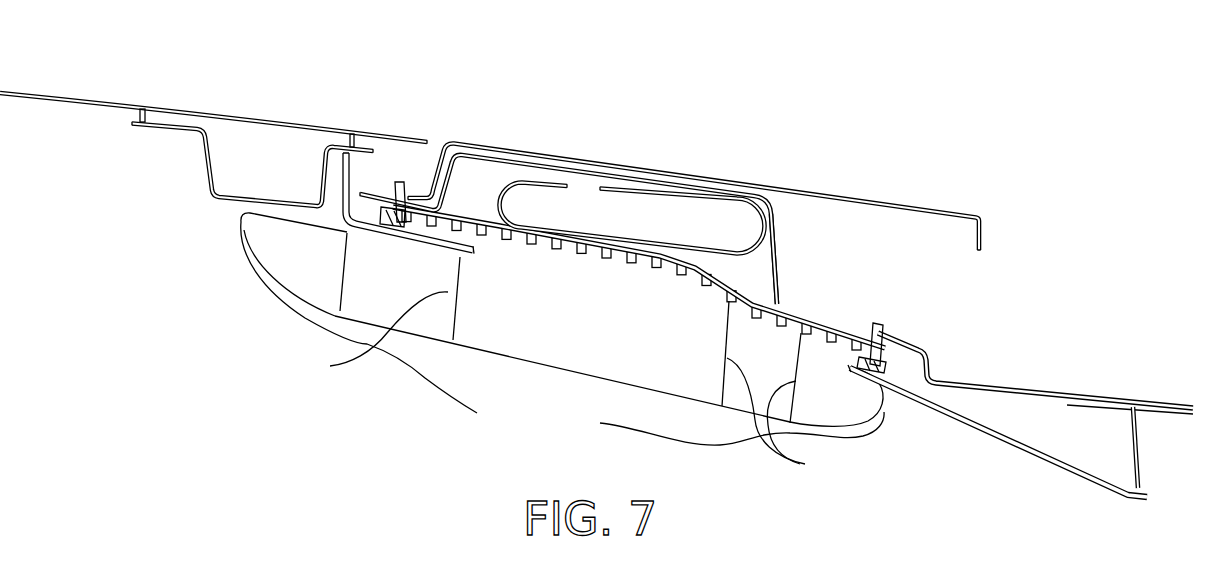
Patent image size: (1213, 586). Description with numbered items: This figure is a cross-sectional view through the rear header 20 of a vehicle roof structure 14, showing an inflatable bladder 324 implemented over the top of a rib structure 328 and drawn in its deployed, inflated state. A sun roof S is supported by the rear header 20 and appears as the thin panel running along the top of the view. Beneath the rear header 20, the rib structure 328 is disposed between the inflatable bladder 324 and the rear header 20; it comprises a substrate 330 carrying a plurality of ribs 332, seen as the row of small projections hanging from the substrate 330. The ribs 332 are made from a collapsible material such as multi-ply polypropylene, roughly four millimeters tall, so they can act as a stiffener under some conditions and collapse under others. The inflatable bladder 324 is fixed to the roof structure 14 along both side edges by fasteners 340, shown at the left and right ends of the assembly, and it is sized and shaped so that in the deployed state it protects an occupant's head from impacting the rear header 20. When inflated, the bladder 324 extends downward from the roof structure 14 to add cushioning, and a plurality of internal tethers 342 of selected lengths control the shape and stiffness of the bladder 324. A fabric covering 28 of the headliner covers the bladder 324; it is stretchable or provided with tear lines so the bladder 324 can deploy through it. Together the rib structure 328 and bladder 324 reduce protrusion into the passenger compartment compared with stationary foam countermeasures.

The sun roof S is at (91, 94).
The roof structure 14 is at (453, 106).
The rear header 20 is at (765, 212).
The fabric covering 28 is at (430, 390).
The inflatable bladder 324 is at (552, 377).
The rib structure 328 is at (781, 290).
The substrate 330 is at (554, 262).
The ribs 332 is at (583, 254).
The fasteners 340 is at (400, 182).
The internal tethers 342 is at (345, 272).